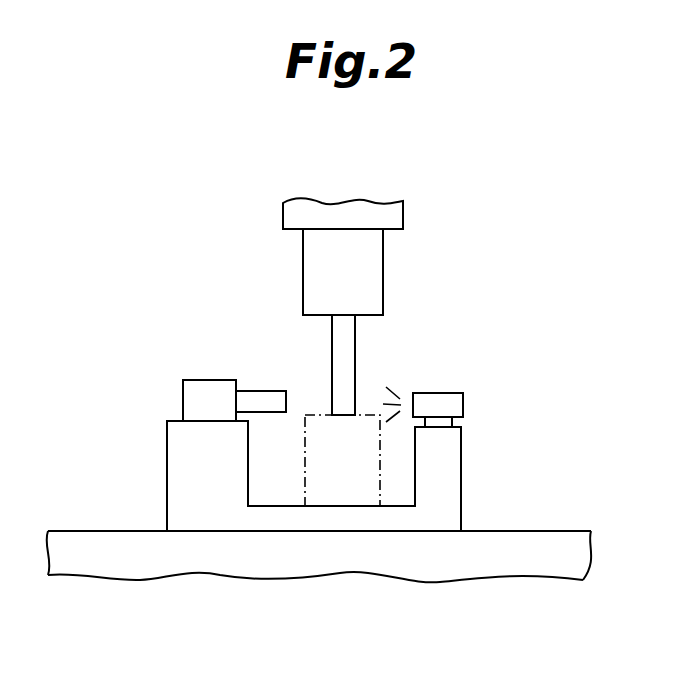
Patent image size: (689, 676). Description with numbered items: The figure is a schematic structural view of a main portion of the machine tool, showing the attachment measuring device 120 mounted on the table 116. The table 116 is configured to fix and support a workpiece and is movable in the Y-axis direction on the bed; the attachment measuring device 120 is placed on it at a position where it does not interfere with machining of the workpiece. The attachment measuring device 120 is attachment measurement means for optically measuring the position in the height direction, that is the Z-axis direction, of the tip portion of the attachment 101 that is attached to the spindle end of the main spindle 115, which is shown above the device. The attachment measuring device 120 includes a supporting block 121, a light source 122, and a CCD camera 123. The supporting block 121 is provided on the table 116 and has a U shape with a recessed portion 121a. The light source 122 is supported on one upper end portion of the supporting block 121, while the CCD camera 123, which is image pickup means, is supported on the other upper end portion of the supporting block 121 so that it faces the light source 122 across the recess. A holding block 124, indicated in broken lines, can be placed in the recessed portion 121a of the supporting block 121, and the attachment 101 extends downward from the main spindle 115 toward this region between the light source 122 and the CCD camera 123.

The attachment measuring device 120 is at (189, 268).
The main spindle 115 is at (403, 213).
The attachment 101 is at (355, 340).
The holding block 124 is at (379, 470).
The supporting block 121 is at (461, 448).
The recessed portion 121a is at (281, 506).
The CCD camera 123 is at (183, 380).
The light source 122 is at (463, 405).
The table 116 is at (548, 531).